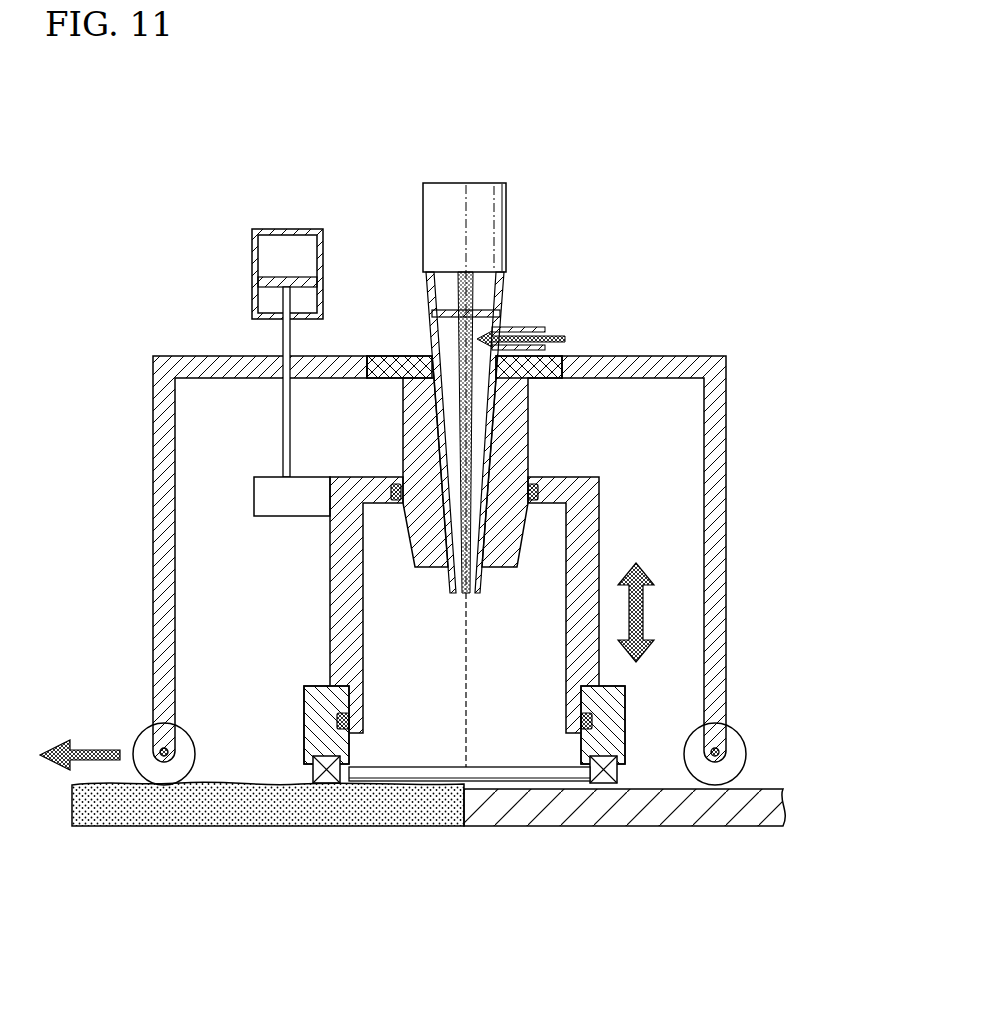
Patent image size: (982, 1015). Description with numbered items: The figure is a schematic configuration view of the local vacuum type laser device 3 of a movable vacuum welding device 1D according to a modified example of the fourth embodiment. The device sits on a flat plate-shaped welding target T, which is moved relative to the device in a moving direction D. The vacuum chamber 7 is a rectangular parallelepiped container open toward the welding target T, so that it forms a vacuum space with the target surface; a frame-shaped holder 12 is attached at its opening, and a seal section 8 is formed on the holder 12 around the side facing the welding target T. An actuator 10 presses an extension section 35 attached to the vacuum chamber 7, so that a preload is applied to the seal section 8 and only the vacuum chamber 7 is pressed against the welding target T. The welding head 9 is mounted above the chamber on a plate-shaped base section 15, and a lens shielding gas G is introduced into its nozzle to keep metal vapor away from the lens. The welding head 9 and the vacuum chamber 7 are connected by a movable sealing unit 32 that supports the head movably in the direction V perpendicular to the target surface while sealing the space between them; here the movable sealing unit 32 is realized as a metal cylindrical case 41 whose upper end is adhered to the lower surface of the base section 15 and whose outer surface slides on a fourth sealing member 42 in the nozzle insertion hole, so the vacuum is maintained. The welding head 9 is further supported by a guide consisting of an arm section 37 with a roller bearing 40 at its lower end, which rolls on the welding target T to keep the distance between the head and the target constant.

The movable vacuum welding device 1D is at (138, 157).
The local vacuum type laser device 3 is at (640, 217).
The vacuum chamber 7 is at (340, 630).
The seal section 8 is at (625, 776).
The welding head 9 is at (512, 233).
The actuator 10 is at (282, 246).
The holder 12 is at (310, 705).
The base section 15 is at (555, 376).
The movable sealing unit 32 is at (584, 443).
The extension section 35 is at (297, 503).
The arm section 37 is at (716, 415).
The roller bearing 40 is at (180, 746).
The cylindrical case 41 is at (520, 420).
The fourth sealing member 42 is at (533, 496).
The lens shielding gas G is at (550, 335).
The direction perpendicular to the surface of the welding target V is at (648, 614).
The moving direction D is at (88, 750).
The welding target T is at (768, 788).